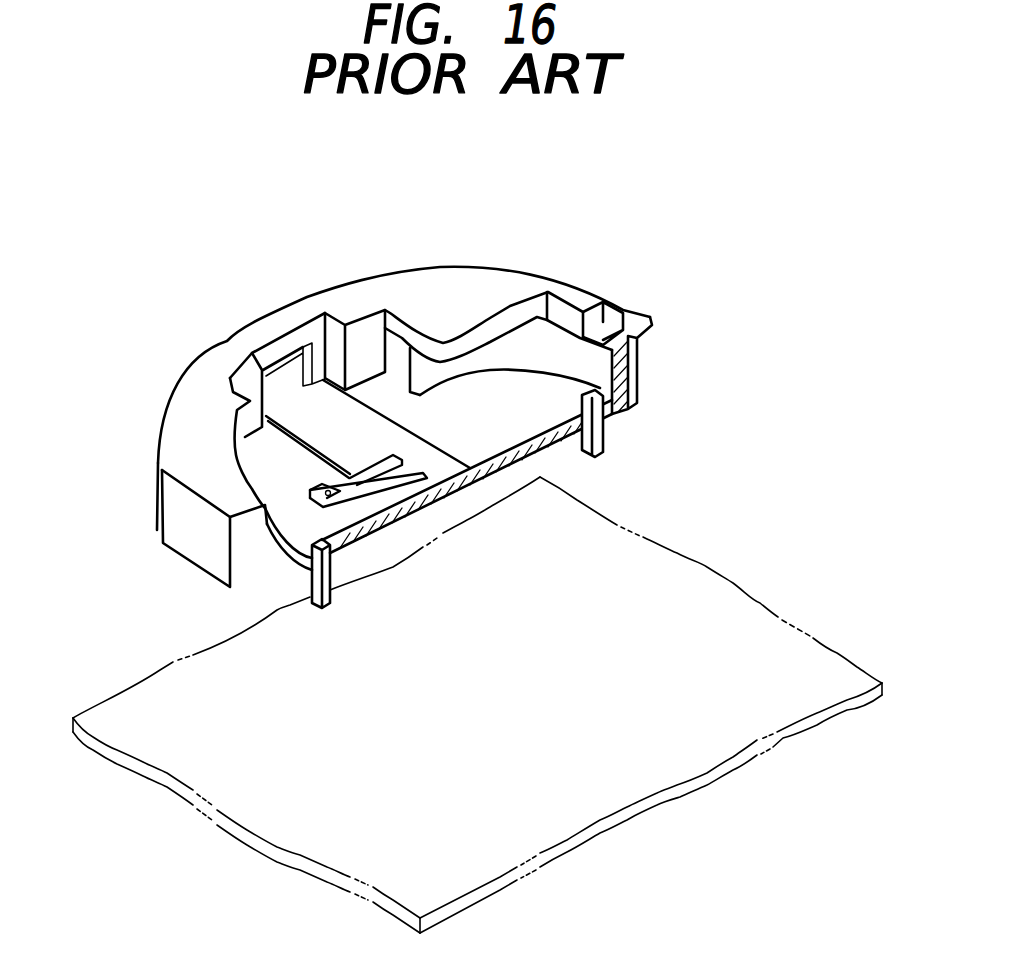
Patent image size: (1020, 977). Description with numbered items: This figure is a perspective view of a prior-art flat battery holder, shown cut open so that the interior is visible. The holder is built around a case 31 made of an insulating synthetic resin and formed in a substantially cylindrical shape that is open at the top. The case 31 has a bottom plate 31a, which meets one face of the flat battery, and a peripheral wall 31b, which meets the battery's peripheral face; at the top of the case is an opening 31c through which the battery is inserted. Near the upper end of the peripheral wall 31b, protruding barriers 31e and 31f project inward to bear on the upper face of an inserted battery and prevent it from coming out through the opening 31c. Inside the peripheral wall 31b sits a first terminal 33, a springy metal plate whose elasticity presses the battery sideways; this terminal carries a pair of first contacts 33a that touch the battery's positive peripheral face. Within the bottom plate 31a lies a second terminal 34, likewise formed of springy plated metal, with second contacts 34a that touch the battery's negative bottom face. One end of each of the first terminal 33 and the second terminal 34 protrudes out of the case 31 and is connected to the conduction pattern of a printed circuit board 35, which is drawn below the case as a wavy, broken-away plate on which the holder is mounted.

The case 31 is at (621, 294).
The bottom plate 31a is at (495, 432).
The peripheral wall 31b is at (190, 430).
The opening 31c is at (378, 347).
The protruding barrier 31e is at (233, 495).
The protruding barrier 31f is at (450, 327).
The first terminal 33 is at (588, 366).
The first contacts 33a is at (428, 382).
The second terminal 34 is at (313, 422).
The second contacts 34a is at (317, 503).
The printed circuit board 35 is at (753, 640).